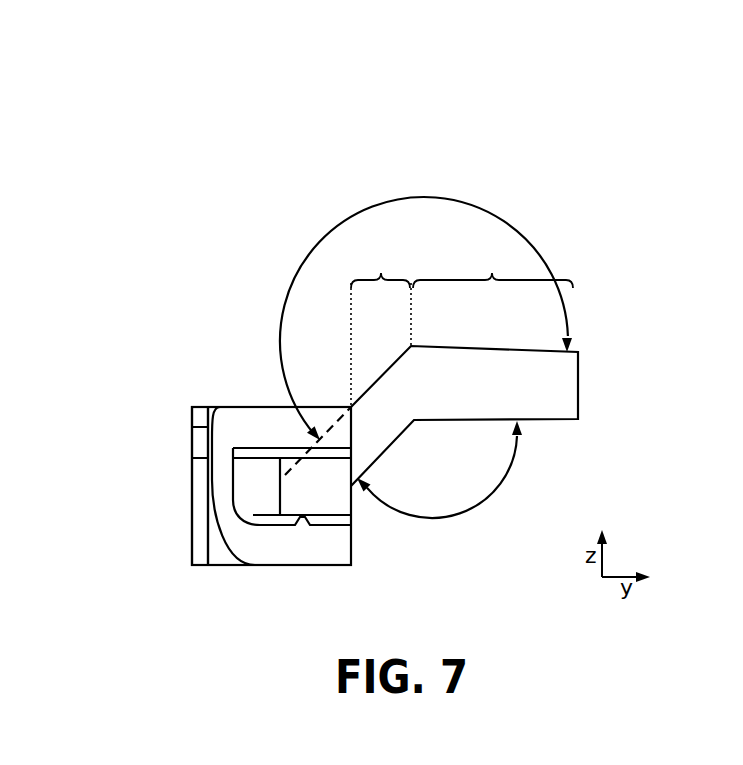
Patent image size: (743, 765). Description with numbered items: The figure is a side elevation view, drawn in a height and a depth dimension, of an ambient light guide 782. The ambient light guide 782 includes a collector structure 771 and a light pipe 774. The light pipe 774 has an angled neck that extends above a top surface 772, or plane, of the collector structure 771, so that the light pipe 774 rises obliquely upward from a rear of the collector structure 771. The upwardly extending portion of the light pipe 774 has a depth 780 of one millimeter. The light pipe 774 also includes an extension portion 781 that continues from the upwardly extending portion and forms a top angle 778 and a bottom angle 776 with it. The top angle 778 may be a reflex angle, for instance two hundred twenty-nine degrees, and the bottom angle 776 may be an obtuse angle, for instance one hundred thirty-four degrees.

The collector structure 771 is at (168, 408).
The top surface 772 is at (200, 407).
The light pipe 774 is at (444, 346).
The bottom angle 776 is at (503, 482).
The top angle 778 is at (512, 225).
The depth 780 is at (380, 326).
The extension portion 781 is at (492, 295).
The ambient light guide 782 is at (208, 105).